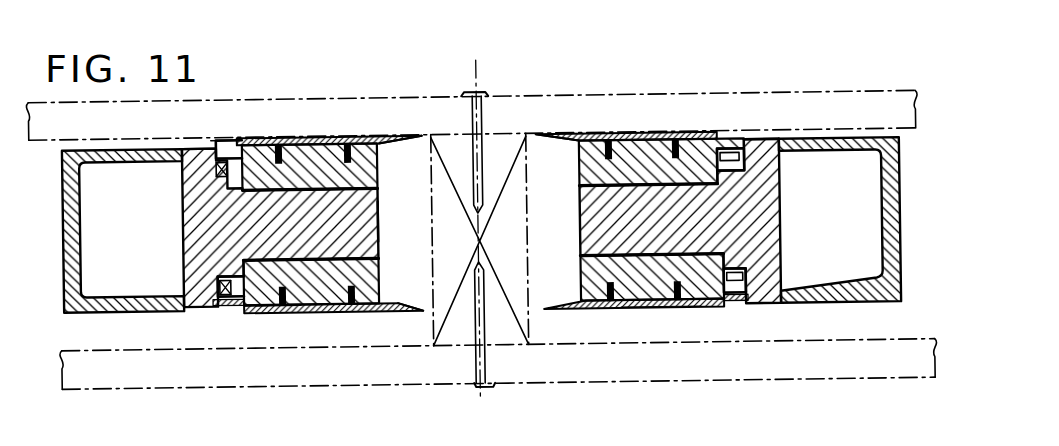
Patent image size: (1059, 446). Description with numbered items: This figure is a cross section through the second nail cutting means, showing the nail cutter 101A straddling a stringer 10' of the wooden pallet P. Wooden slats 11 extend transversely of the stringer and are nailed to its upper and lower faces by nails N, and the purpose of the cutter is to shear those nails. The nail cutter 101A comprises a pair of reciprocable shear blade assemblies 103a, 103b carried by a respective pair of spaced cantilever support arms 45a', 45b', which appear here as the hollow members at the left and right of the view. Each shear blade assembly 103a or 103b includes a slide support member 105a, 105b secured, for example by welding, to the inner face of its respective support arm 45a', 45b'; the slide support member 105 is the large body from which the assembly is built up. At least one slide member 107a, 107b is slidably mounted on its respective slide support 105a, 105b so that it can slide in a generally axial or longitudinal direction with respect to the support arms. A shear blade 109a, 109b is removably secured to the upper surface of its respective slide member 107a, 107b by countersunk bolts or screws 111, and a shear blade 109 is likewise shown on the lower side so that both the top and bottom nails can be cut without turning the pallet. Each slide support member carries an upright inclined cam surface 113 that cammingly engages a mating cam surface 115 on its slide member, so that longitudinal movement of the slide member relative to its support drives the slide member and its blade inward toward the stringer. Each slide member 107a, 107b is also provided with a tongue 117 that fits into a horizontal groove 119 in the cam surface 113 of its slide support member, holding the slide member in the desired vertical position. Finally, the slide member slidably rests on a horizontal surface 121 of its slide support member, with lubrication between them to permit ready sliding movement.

The stringer 10' is at (475, 257).
The wooden slat 11 is at (627, 115).
The cantilever support arm 45a' is at (117, 247).
The cantilever support arm 45b' is at (841, 273).
The nail cutter 101A is at (392, 117).
The shear blade assembly 103a is at (262, 326).
The shear blade assembly 103b is at (648, 324).
The slide support member 105 is at (380, 219).
The slide support member 105a is at (206, 217).
The slide support member 105b is at (760, 230).
The slide member 107a is at (378, 164).
The slide member 107b is at (580, 173).
The shear blade 109 is at (370, 315).
The shear blade 109a is at (403, 134).
The shear blade 109b is at (562, 120).
The countersunk bolt 111 is at (352, 135).
The cam surface 113 is at (250, 134).
The cam surface 115 is at (267, 137).
The tongue 117 is at (213, 169).
The horizontal groove 119 is at (220, 153).
The horizontal surface 121 is at (335, 188).
The nail N is at (485, 92).
The wooden pallet P is at (557, 81).